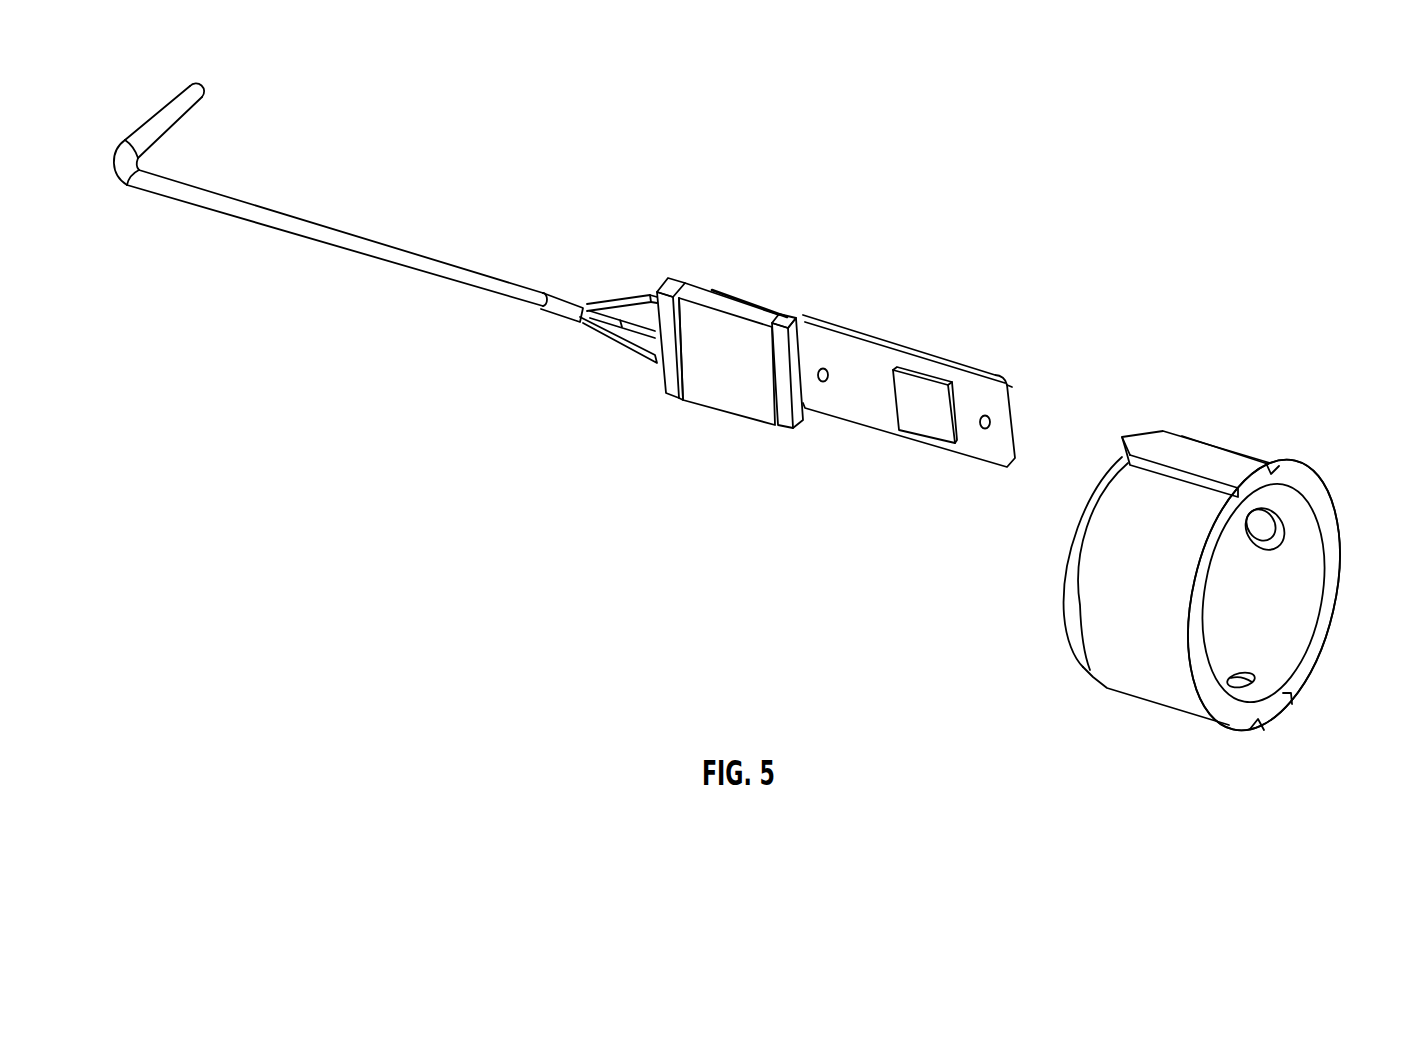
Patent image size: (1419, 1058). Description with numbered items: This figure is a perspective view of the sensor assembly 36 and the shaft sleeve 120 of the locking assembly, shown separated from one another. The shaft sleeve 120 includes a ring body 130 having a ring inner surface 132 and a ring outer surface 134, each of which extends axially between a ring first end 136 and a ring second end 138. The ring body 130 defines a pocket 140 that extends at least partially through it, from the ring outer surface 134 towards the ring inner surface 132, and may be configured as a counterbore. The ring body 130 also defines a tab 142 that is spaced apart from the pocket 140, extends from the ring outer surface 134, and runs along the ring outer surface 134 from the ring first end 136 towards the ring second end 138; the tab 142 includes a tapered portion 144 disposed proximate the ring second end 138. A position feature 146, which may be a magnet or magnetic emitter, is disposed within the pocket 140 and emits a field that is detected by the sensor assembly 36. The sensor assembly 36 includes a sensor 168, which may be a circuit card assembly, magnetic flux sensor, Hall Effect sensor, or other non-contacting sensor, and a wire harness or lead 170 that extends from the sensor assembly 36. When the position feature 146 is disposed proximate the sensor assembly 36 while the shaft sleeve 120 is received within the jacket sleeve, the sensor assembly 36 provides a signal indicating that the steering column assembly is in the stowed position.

The sensor assembly 36 is at (778, 383).
The shaft sleeve 120 is at (1207, 555).
The ring body 130 is at (1278, 460).
The ring inner surface 132 is at (1315, 572).
The ring outer surface 134 is at (1337, 513).
The ring first end 136 is at (1310, 645).
The ring second end 138 is at (1077, 517).
The pocket 140 is at (1265, 550).
The tab 142 is at (1190, 448).
The tapered portion 144 is at (1135, 440).
The position feature 146 is at (1258, 520).
The sensor 168 is at (920, 418).
The lead 170 is at (377, 242).